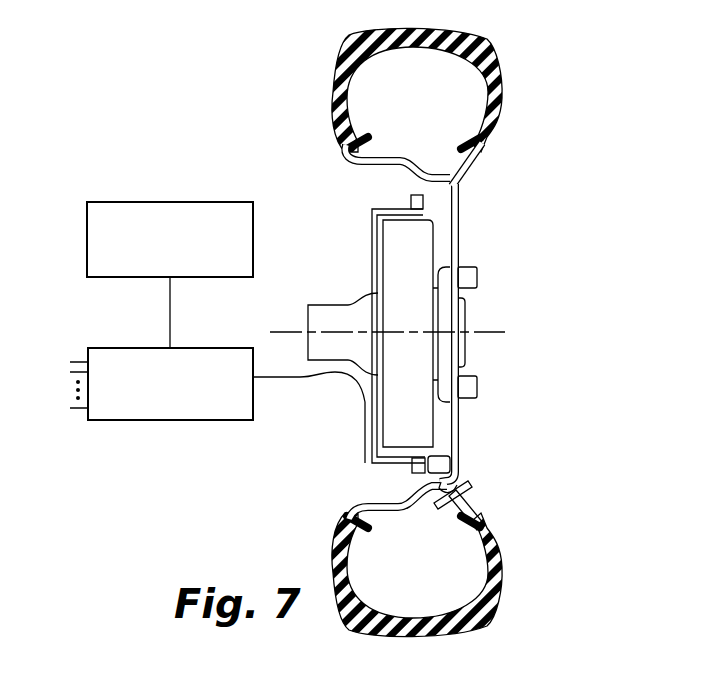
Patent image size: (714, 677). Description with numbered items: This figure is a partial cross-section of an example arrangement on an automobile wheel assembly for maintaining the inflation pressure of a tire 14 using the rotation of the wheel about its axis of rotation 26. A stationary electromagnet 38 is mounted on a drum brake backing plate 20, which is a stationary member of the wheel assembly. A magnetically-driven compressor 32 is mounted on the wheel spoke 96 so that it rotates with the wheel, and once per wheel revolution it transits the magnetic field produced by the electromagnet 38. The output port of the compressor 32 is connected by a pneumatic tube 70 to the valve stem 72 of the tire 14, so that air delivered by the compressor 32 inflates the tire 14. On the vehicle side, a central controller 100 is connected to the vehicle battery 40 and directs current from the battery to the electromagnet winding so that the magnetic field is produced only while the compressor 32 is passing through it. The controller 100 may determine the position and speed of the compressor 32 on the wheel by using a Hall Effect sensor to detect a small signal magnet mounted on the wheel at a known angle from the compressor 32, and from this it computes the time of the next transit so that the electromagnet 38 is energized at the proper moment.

The tire 14 is at (501, 73).
The wheel spoke 96 is at (456, 218).
The drum brake backing plate 20 is at (374, 250).
The electromagnet 38 is at (405, 198).
The compressor 32 is at (446, 462).
The pneumatic tube 70 is at (455, 483).
The valve stem 72 is at (472, 497).
The axis of rotation 26 is at (499, 332).
The vehicle battery 40 is at (194, 202).
The central controller 100 is at (256, 407).